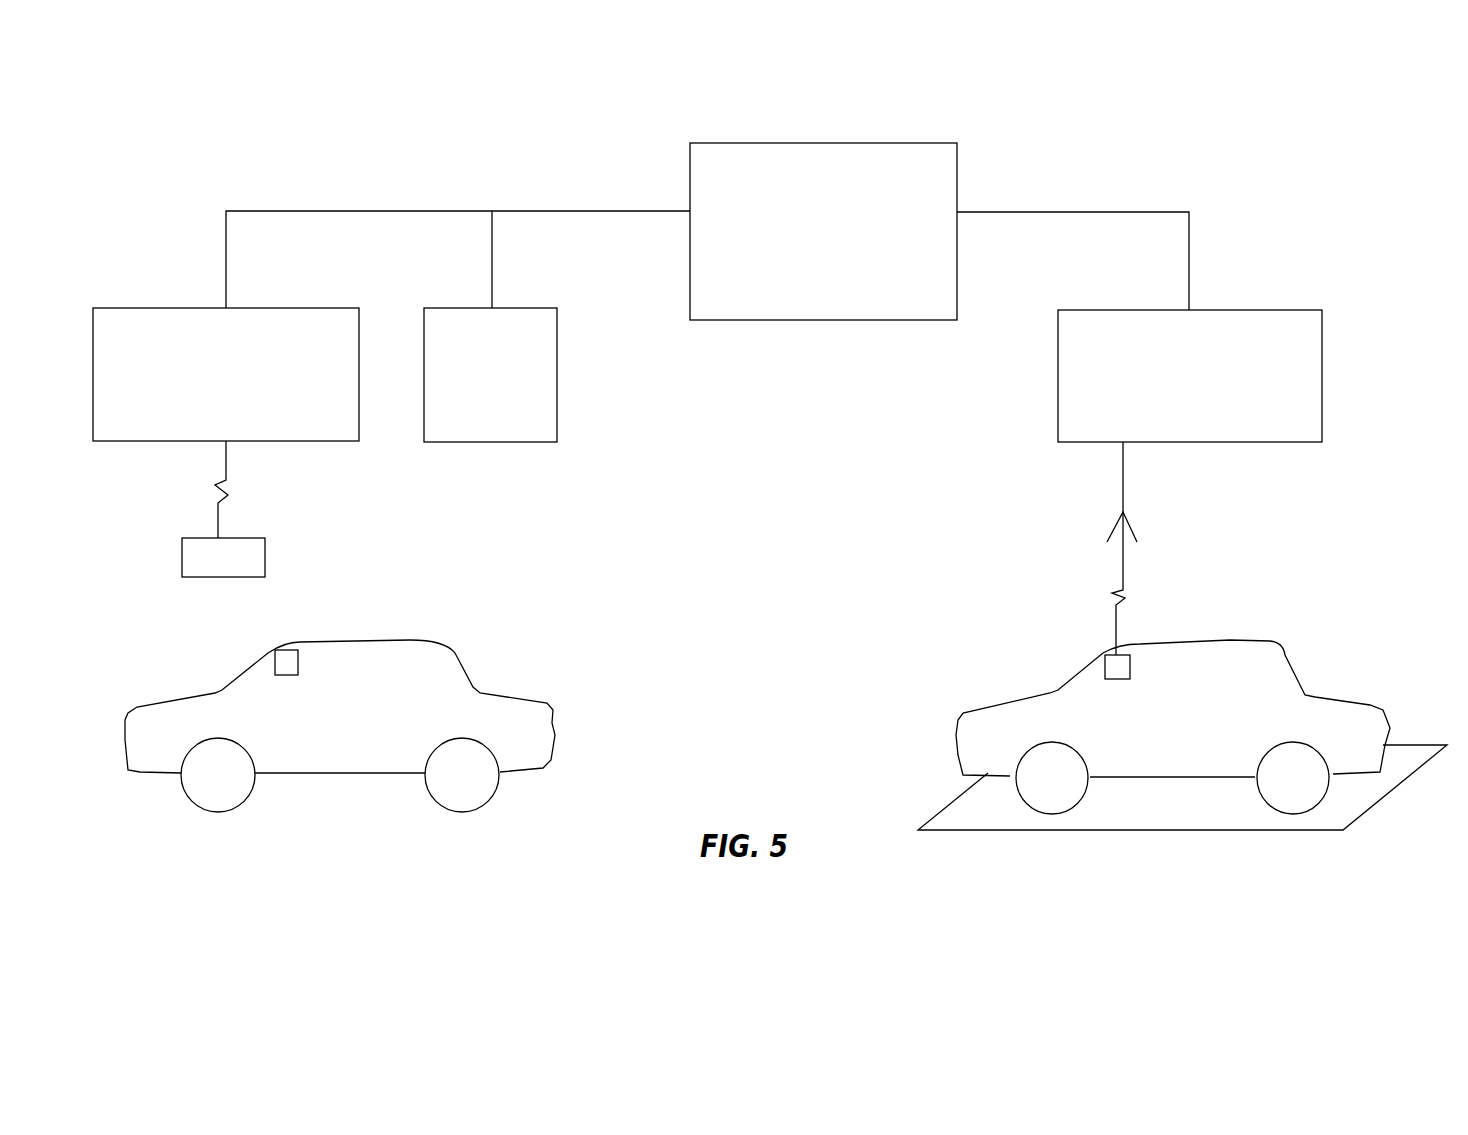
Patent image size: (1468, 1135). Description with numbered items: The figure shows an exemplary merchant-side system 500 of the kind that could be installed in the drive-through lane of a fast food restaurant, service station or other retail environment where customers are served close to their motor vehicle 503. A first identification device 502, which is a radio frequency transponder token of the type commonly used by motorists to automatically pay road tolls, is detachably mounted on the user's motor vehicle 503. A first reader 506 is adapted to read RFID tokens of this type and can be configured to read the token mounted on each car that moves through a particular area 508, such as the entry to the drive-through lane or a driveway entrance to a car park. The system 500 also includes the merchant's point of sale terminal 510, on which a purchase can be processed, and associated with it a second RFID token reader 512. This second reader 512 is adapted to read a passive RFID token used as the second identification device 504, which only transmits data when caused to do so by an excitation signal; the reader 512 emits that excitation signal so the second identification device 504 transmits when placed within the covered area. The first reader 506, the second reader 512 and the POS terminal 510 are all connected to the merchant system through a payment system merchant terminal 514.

The system 500 is at (1086, 174).
The first identification device 502 is at (303, 634).
The motor vehicle 503 is at (364, 738).
The second identification device 504 is at (265, 538).
The first reader 506 is at (1167, 407).
The area 508 is at (1172, 834).
The point of sale (POS) terminal 510 is at (467, 422).
The second RFID token reader 512 is at (203, 407).
The payment system merchant terminal 514 is at (800, 312).